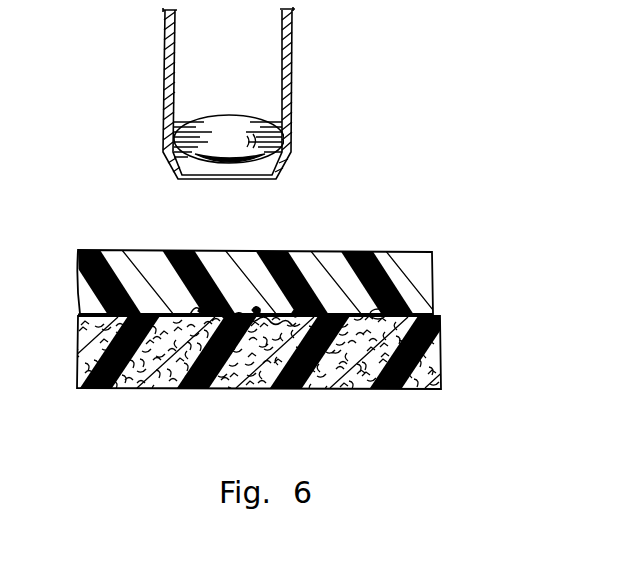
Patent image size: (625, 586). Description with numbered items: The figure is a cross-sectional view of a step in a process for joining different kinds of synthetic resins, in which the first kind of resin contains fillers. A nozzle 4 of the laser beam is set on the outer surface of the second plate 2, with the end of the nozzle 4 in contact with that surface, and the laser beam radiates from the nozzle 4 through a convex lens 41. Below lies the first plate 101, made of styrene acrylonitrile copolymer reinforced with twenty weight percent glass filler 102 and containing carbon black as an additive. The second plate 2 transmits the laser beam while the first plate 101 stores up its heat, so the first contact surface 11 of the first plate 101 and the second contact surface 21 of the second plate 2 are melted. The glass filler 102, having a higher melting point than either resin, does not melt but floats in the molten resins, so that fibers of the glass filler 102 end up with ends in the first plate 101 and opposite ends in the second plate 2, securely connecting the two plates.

The nozzle 4 is at (293, 43).
The convex lens 41 is at (272, 126).
The second plate 2 is at (400, 262).
The second contact surface 21 is at (104, 325).
The first contact surface 11 is at (372, 319).
The first plate 101 is at (397, 389).
The glass filler 102 is at (314, 381).